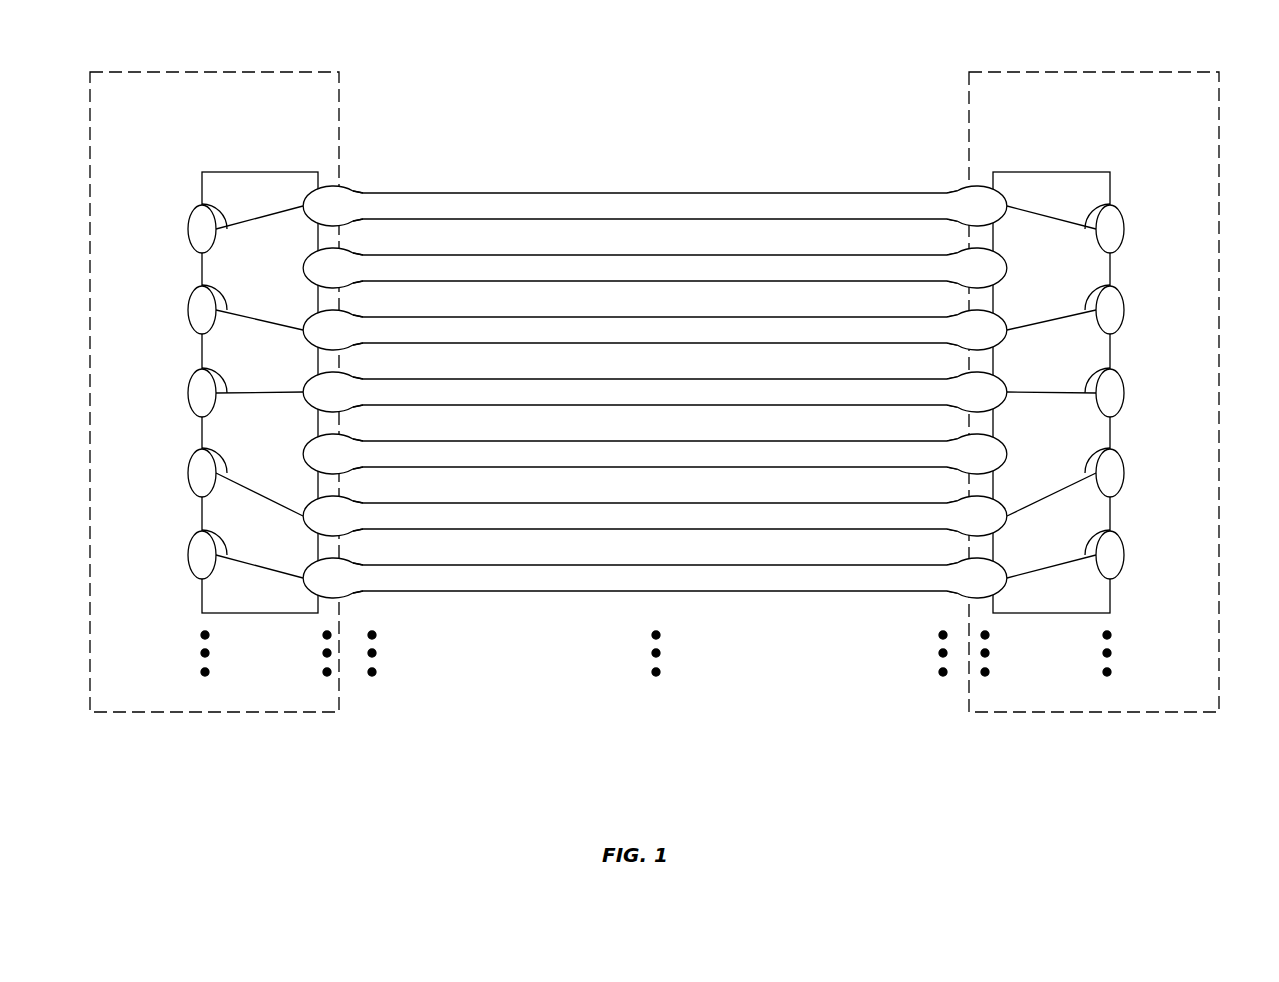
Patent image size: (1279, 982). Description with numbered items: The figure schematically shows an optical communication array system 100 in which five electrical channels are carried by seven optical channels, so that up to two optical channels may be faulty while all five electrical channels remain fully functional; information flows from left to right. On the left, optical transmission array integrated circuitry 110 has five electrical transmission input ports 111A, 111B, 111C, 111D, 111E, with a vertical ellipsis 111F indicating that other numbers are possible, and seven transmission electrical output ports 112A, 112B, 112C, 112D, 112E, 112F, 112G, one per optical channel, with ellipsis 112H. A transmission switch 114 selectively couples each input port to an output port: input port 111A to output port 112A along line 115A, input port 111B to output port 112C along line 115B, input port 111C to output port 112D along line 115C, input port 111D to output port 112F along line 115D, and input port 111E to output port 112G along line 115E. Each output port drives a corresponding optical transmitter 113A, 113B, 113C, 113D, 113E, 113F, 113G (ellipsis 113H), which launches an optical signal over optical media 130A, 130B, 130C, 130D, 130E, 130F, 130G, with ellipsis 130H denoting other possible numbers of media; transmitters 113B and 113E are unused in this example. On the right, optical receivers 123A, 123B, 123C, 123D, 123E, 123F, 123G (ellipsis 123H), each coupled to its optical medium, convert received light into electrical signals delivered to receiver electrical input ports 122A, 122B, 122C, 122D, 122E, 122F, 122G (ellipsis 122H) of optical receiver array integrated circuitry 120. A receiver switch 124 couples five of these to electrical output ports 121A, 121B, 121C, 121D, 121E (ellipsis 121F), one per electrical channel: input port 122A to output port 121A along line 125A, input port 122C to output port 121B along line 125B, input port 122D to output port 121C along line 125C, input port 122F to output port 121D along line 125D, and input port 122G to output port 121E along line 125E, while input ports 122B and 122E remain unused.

The optical communication array system 100 is at (677, 106).
The optical transmission array integrated circuitry 110 is at (216, 71).
The electrical transmission input port 111A is at (188, 229).
The electrical transmission input port 111B is at (188, 310).
The electrical transmission input port 111C is at (188, 393).
The electrical transmission input port 111D is at (188, 473).
The electrical transmission input port 111E is at (188, 555).
The vertical ellipsis 111F is at (200, 654).
The transmission electrical output port 112A is at (312, 195).
The transmission electrical output port 112B is at (312, 257).
The transmission electrical output port 112C is at (312, 310).
The transmission electrical output port 112D is at (312, 372).
The transmission electrical output port 112E is at (312, 434).
The transmission electrical output port 112F is at (312, 496).
The transmission electrical output port 112G is at (312, 558).
The vertical ellipsis 112H is at (322, 654).
The optical transmitter 113A is at (356, 189).
The optical transmitter 113B is at (356, 251).
The optical transmitter 113C is at (356, 313).
The optical transmitter 113D is at (356, 375).
The optical transmitter 113E is at (356, 437).
The optical transmitter 113F is at (356, 499).
The optical transmitter 113G is at (356, 561).
The vertical ellipsis 113H is at (377, 654).
The transmission switch 114 is at (260, 171).
The line 115A is at (203, 207).
The line 115B is at (203, 288).
The line 115C is at (203, 371).
The line 115D is at (203, 451).
The line 115E is at (203, 533).
The optical receiver array integrated circuitry 120 is at (1096, 71).
The electrical output port 121A is at (1124, 229).
The electrical output port 121B is at (1124, 310).
The electrical output port 121C is at (1124, 393).
The electrical output port 121D is at (1124, 473).
The electrical output port 121E is at (1124, 555).
The vertical ellipsis 121F is at (1112, 654).
The receiver electrical input port 122A is at (998, 195).
The receiver electrical input port 122B is at (998, 257).
The receiver electrical input port 122C is at (1000, 310).
The receiver electrical input port 122D is at (1000, 372).
The receiver electrical input port 122E is at (1000, 434).
The receiver electrical input port 122F is at (1000, 496).
The receiver electrical input port 122G is at (1000, 558).
The vertical ellipsis 122H is at (990, 654).
The optical receiver 123A is at (954, 189).
The optical receiver 123B is at (954, 251).
The optical receiver 123C is at (954, 313).
The optical receiver 123D is at (954, 375).
The optical receiver 123E is at (954, 437).
The optical receiver 123F is at (954, 499).
The optical receiver 123G is at (954, 561).
The vertical ellipsis 123H is at (938, 654).
The receiver switch 124 is at (1051, 171).
The line 125A is at (1108, 207).
The line 125B is at (1108, 288).
The line 125C is at (1108, 371).
The line 125D is at (1108, 451).
The line 125E is at (1108, 533).
The optical medium 130A is at (656, 192).
The optical medium 130B is at (656, 254).
The optical medium 130C is at (656, 316).
The optical medium 130D is at (656, 378).
The optical medium 130E is at (656, 440).
The optical medium 130F is at (656, 502).
The optical medium 130G is at (656, 564).
The vertical ellipsis 130H is at (661, 654).